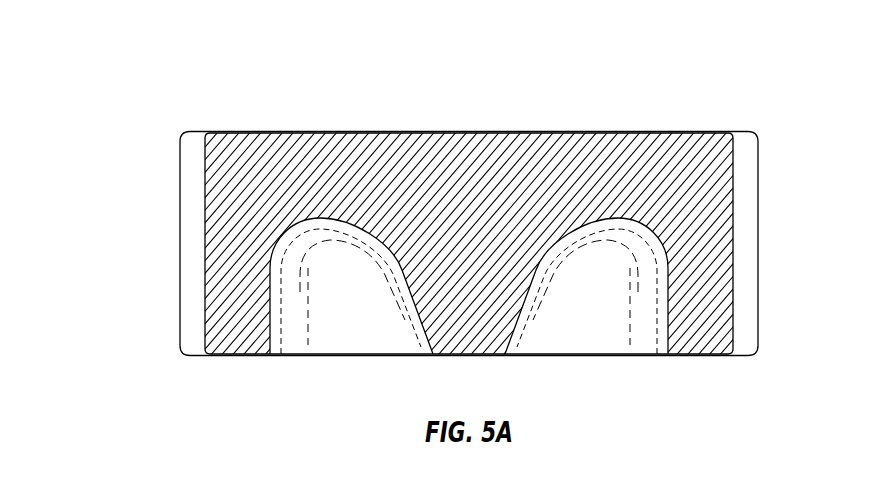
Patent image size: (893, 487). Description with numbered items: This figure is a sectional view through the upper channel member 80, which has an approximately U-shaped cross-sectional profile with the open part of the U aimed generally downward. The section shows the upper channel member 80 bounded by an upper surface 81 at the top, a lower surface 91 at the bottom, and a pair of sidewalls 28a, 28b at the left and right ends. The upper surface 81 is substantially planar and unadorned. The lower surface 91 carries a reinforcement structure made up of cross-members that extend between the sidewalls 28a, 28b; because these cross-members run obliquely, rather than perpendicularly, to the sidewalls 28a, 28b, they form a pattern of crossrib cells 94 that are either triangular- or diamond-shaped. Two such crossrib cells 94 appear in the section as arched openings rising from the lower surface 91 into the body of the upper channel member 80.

The upper channel member 80 is at (190, 46).
The upper surface 81 is at (373, 131).
The sidewall 28a is at (180, 258).
The sidewall 28b is at (758, 258).
The crossrib cell 94 is at (270, 349).
The lower surface 91 is at (468, 355).